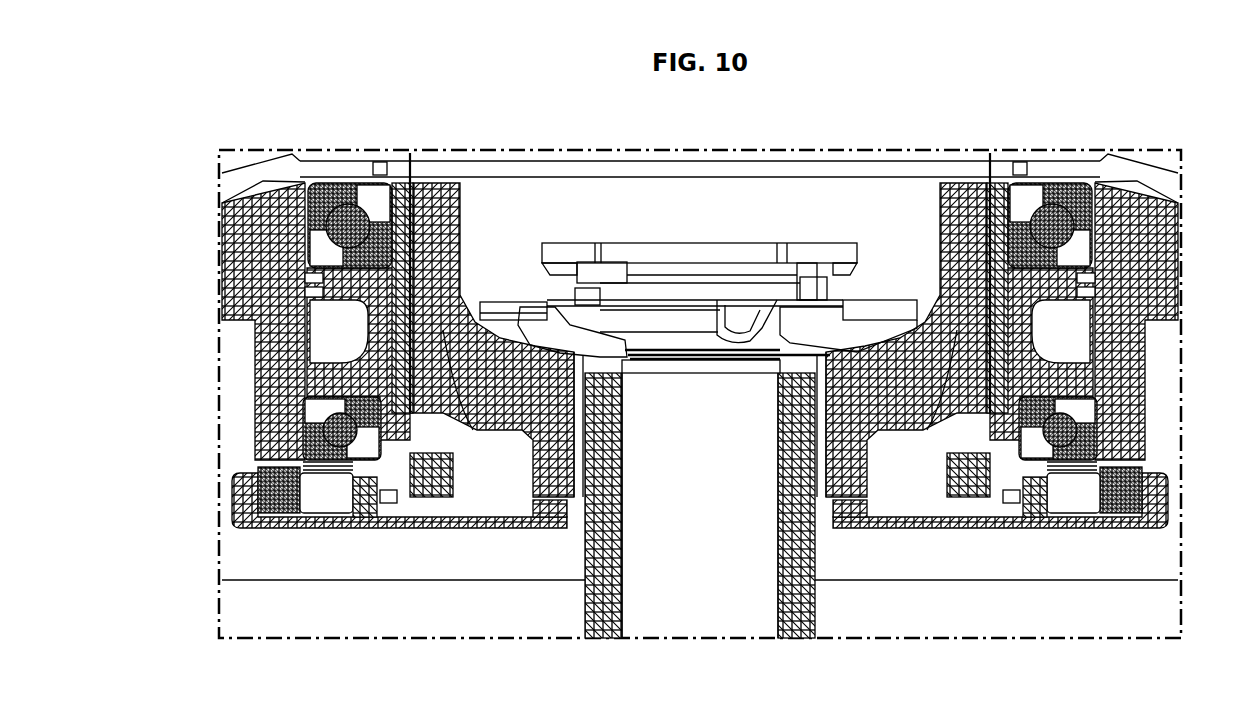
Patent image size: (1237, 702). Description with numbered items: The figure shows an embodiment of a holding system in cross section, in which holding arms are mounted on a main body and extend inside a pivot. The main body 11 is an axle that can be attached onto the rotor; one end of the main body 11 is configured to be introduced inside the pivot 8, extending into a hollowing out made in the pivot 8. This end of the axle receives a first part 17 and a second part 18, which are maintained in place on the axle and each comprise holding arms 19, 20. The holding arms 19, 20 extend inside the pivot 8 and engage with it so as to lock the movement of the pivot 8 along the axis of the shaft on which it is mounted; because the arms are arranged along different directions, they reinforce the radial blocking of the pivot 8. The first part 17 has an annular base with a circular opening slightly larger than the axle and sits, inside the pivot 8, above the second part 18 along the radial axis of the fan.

The pivot 8 is at (905, 388).
The main body 11 is at (705, 530).
The first part 17 is at (672, 330).
The second part 18 is at (655, 300).
The holding arm 19 is at (812, 335).
The holding arm 20 is at (532, 337).